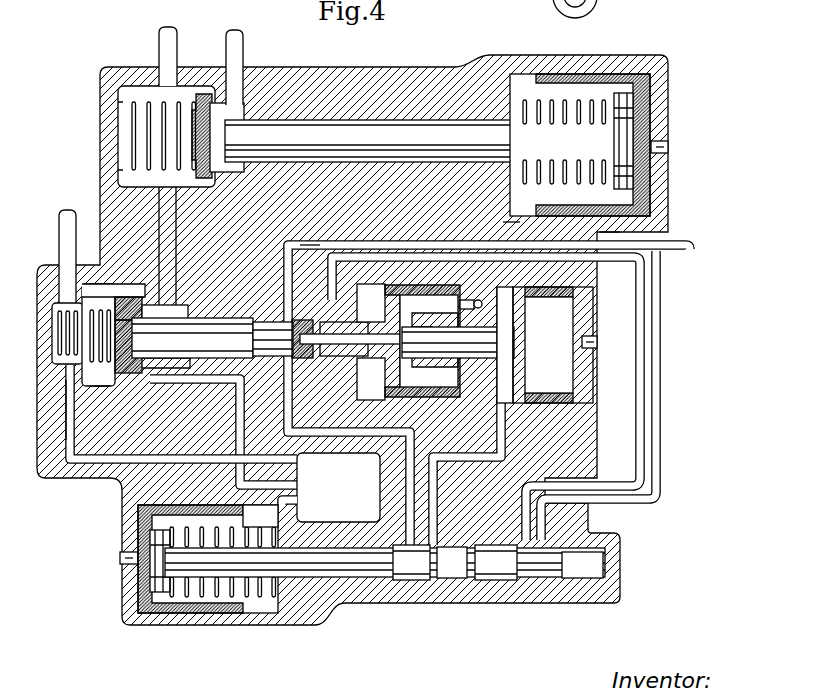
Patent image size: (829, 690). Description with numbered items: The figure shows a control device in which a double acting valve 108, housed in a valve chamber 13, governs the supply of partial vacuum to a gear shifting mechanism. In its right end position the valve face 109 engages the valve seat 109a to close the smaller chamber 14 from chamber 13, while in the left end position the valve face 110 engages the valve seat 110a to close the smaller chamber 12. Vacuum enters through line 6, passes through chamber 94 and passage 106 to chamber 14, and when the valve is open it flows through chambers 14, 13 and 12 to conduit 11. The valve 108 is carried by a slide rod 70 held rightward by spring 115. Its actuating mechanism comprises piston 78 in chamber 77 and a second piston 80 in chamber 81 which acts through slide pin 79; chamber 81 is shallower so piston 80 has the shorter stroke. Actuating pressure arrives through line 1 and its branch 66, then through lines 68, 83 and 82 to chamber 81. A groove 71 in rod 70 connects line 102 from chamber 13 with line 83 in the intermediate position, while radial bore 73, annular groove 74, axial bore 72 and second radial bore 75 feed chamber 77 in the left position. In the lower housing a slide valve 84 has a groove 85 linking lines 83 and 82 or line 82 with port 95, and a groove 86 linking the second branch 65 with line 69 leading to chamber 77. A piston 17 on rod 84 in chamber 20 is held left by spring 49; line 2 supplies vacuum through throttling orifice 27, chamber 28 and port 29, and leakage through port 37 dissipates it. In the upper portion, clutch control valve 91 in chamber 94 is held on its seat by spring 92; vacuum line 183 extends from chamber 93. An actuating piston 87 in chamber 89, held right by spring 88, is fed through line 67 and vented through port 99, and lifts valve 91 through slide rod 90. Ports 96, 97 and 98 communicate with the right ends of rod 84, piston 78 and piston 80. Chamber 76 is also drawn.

The actuating pressure supply line 1 is at (672, 247).
The line 2 is at (122, 459).
The line 6 is at (159, 37).
The conduit 11 is at (70, 220).
The smaller chamber 12 is at (72, 355).
The valve chamber 13 is at (97, 388).
The smaller chamber 14 is at (176, 311).
The piston 17 is at (160, 612).
The chamber 20 is at (278, 600).
The throttling orifice 27 is at (272, 498).
The chamber 28 is at (338, 487).
The port 29 is at (258, 506).
The port 37 is at (124, 556).
The spring 49 is at (268, 600).
The second branch 65 is at (660, 430).
The branch 66 is at (588, 228).
The line 67 is at (499, 222).
The line 68 is at (340, 243).
The line 69 is at (638, 456).
The slide rod 70 is at (192, 338).
The groove 71 is at (276, 330).
The axial bore 72 is at (318, 346).
The radial bore 73 is at (300, 358).
The annular groove 74 is at (322, 324).
The second radial bore 75 is at (371, 379).
The chamber 76 is at (371, 303).
The chamber 77 is at (380, 394).
The piston 78 is at (420, 394).
The slide pin 79 is at (458, 342).
The second piston 80 is at (548, 396).
The chamber 81 is at (500, 378).
The line 82 is at (435, 470).
The line 83 is at (292, 430).
The slide valve 84 is at (385, 562).
The groove 85 is at (428, 576).
The groove 86 is at (505, 578).
The actuating piston 87 is at (600, 78).
The spring 88 is at (545, 112).
The chamber 89 is at (520, 92).
The slide rod 90 is at (419, 141).
The clutch control valve 91 is at (200, 94).
The spring 92 is at (118, 121).
The chamber 93 is at (238, 162).
The chamber 94 is at (128, 131).
The port 95 is at (455, 579).
The port 96 is at (612, 569).
The port 97 is at (466, 301).
The port 98 is at (590, 344).
The port 99 is at (662, 151).
The line 102 is at (218, 388).
The passage 106 is at (177, 206).
The double acting valve 108 is at (128, 297).
The valve face 109 is at (132, 374).
The valve seat 109a is at (145, 372).
The valve face 110 is at (98, 335).
The valve seat 110a is at (78, 290).
The spring 115 is at (62, 388).
The vacuum pressure line 183 is at (243, 56).